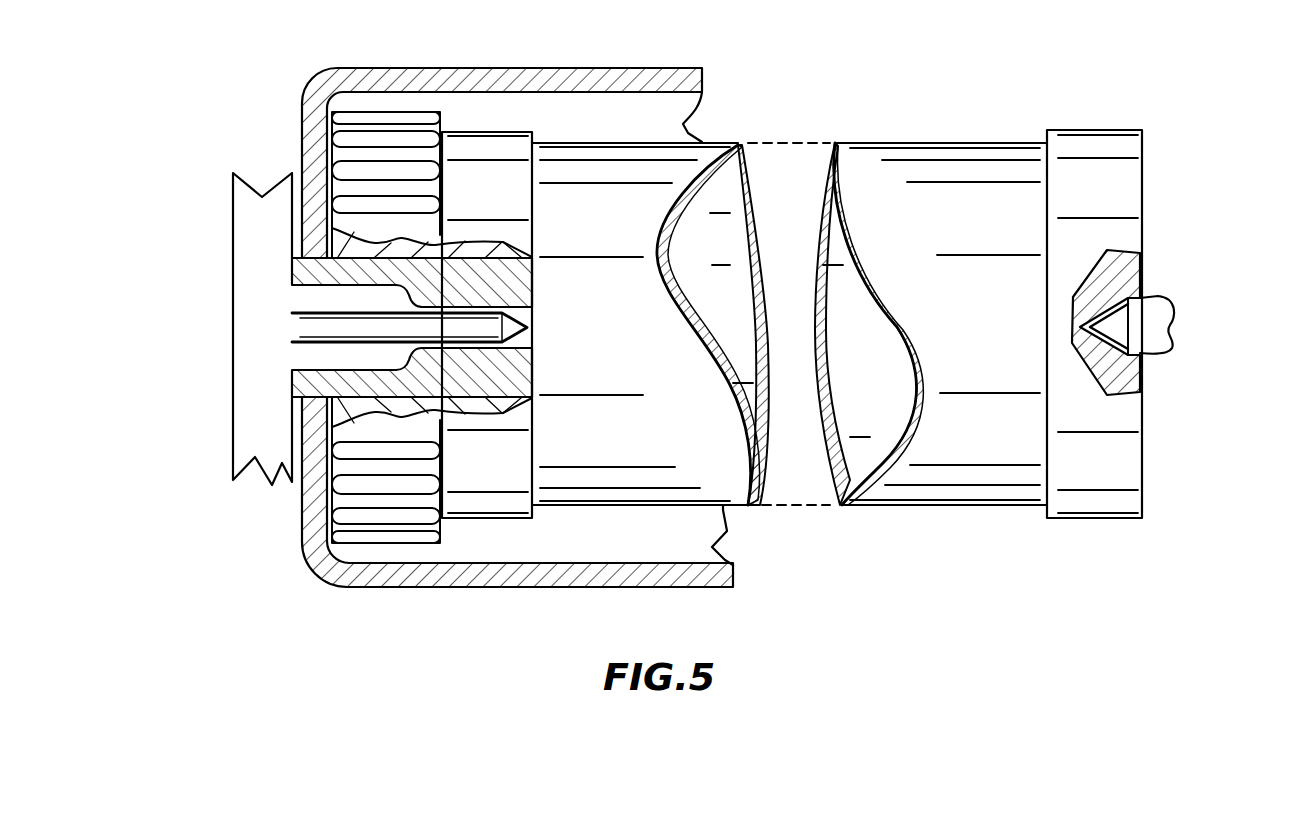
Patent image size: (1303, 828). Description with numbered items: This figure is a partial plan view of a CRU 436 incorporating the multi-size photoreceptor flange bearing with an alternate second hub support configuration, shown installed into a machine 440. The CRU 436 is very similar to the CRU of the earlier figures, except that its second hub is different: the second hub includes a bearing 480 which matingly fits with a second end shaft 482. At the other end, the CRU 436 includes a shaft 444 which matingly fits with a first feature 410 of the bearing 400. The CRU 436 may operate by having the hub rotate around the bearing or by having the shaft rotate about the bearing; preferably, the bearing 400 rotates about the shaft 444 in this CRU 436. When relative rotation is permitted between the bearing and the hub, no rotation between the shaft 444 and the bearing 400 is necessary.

The bearing 400 is at (465, 257).
The first feature 410 is at (522, 303).
The shaft 444 is at (380, 328).
The machine 440 is at (273, 520).
The CRU 436 is at (385, 605).
The bearing 480 is at (1127, 273).
The second end shaft 482 is at (1163, 318).